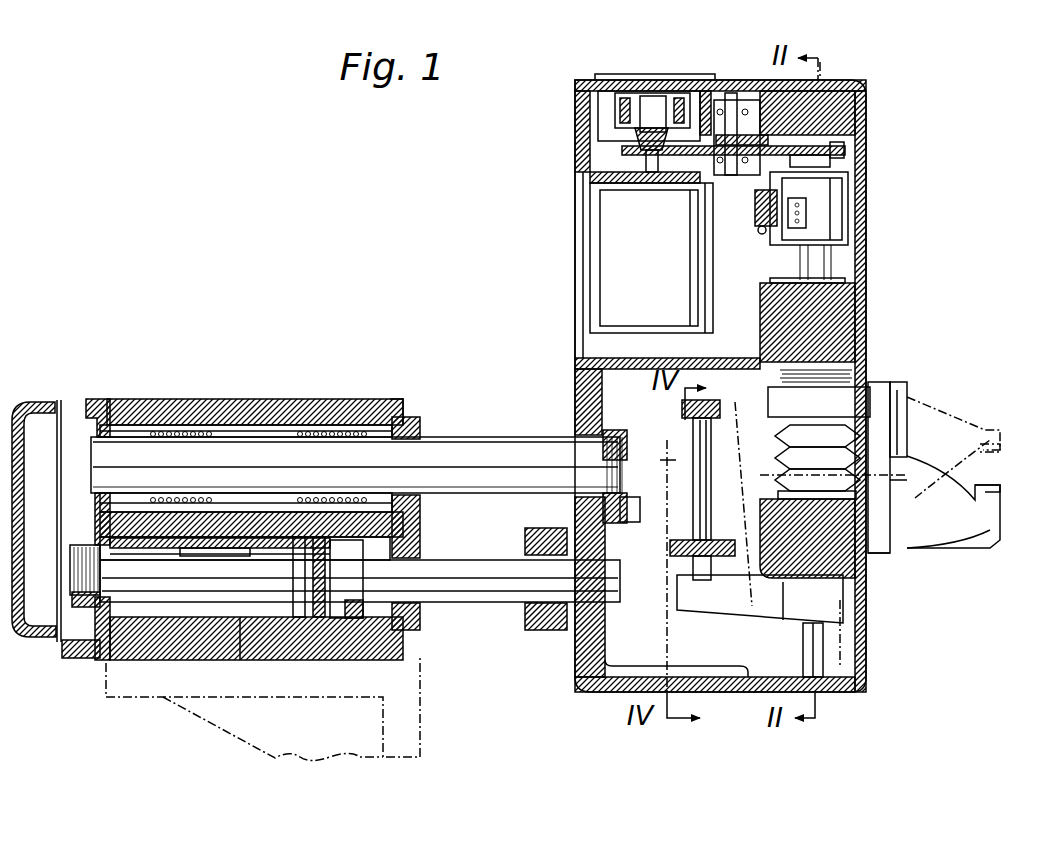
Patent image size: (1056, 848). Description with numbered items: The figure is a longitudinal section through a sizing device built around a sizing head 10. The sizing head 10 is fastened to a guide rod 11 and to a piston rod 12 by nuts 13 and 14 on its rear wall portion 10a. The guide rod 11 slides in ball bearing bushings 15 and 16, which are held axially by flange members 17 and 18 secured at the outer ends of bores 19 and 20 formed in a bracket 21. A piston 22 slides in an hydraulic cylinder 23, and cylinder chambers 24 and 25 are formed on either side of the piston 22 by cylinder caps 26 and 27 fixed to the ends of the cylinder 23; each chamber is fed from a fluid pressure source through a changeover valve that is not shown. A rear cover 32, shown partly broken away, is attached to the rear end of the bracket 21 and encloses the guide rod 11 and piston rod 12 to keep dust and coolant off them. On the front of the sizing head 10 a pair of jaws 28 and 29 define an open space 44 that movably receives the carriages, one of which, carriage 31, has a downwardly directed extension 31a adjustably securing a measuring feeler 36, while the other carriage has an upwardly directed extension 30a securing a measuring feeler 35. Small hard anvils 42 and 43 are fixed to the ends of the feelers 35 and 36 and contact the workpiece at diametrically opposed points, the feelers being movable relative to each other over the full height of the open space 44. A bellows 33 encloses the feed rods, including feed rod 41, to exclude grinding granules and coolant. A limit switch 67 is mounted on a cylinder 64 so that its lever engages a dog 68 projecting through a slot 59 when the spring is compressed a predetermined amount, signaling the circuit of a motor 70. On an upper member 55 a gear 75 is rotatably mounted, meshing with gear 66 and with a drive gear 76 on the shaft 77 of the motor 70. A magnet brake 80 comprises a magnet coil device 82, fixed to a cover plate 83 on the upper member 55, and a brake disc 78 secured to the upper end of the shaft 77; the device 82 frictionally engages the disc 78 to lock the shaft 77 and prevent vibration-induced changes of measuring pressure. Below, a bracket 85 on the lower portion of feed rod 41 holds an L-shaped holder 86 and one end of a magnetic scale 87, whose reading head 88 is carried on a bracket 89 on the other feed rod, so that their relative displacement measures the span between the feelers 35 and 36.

The sizing head 10 is at (880, 318).
The rear wall portion 10a is at (630, 478).
The guide rod 11 is at (483, 462).
The piston rod 12 is at (483, 602).
The nut 13 is at (628, 440).
The nut 14 is at (668, 548).
The ball bearing bushing 15 is at (184, 425).
The ball bearing bushing 16 is at (335, 428).
The flange member 17 is at (116, 400).
The flange member 18 is at (418, 420).
The bore 19 is at (222, 428).
The bore 20 is at (304, 425).
The bracket 21 is at (372, 398).
The piston 22 is at (297, 618).
The hydraulic cylinder 23 is at (256, 618).
The cylinder chamber 24 is at (210, 618).
The cylinder chamber 25 is at (352, 618).
The cylinder cap 26 is at (108, 612).
The cylinder cap 27 is at (405, 630).
The jaw 28 is at (840, 300).
The jaw 29 is at (850, 560).
The upwardly directed extension 30a is at (897, 385).
The carriage 31 is at (850, 395).
The downwardly directed extension 31a is at (885, 553).
The rear cover 32 is at (48, 402).
The bellows 33 is at (858, 372).
The measuring feeler 35 is at (980, 425).
The measuring feeler 36 is at (992, 510).
The feed rod 41 is at (830, 268).
The anvil 42 is at (1002, 448).
The anvil 43 is at (1001, 489).
The open space 44 is at (768, 440).
The upper member 55 is at (846, 112).
The slot 59 is at (770, 300).
The cylinder 64 is at (840, 218).
The gear 66 is at (850, 150).
The limit switch 67 is at (756, 208).
The dog 68 is at (750, 270).
The motor 70 is at (702, 258).
The gear 75 is at (762, 160).
The drive gear 76 is at (625, 150).
The shaft 77 is at (650, 155).
The brake disc 78 is at (700, 145).
The magnet brake 80 is at (612, 128).
The magnet coil device 82 is at (612, 104).
The cover plate 83 is at (858, 84).
The bracket 85 is at (712, 598).
The L-shaped holder 86 is at (704, 480).
The magnetic scale 87 is at (702, 452).
The reading head 88 is at (708, 510).
The bracket 89 is at (680, 568).